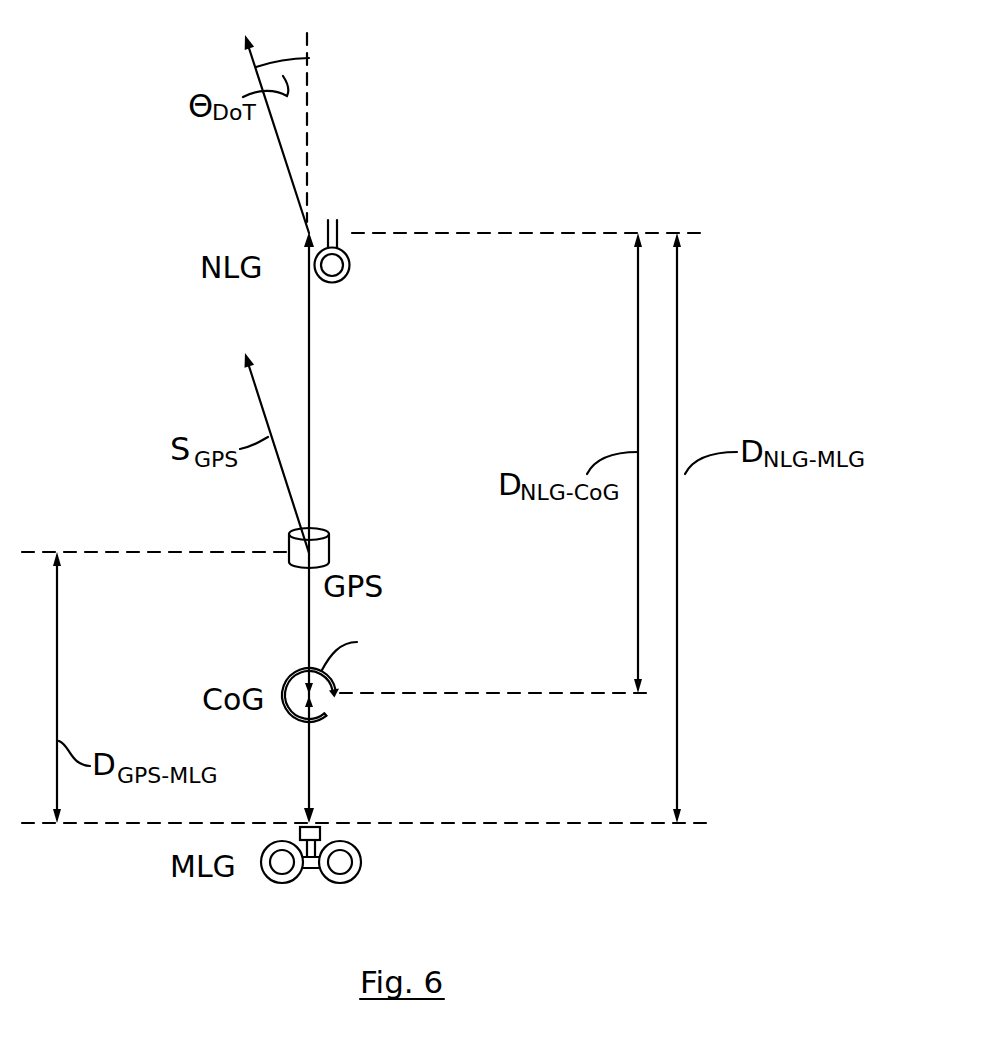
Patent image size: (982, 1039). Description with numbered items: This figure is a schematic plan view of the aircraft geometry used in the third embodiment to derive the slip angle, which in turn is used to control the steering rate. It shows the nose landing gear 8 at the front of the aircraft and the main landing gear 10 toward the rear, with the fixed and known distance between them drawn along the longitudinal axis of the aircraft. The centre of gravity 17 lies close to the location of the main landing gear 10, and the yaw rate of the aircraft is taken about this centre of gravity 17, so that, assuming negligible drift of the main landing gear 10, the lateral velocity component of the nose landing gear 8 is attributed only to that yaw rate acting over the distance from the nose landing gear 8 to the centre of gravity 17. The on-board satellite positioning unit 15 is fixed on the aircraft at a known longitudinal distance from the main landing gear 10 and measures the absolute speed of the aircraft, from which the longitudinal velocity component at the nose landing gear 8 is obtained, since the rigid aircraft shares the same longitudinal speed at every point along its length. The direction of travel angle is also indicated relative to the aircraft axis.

The NLG 8 is at (345, 276).
The GPS unit 15 is at (318, 531).
The centre of gravity 17 is at (314, 697).
The MLG 10 is at (361, 862).